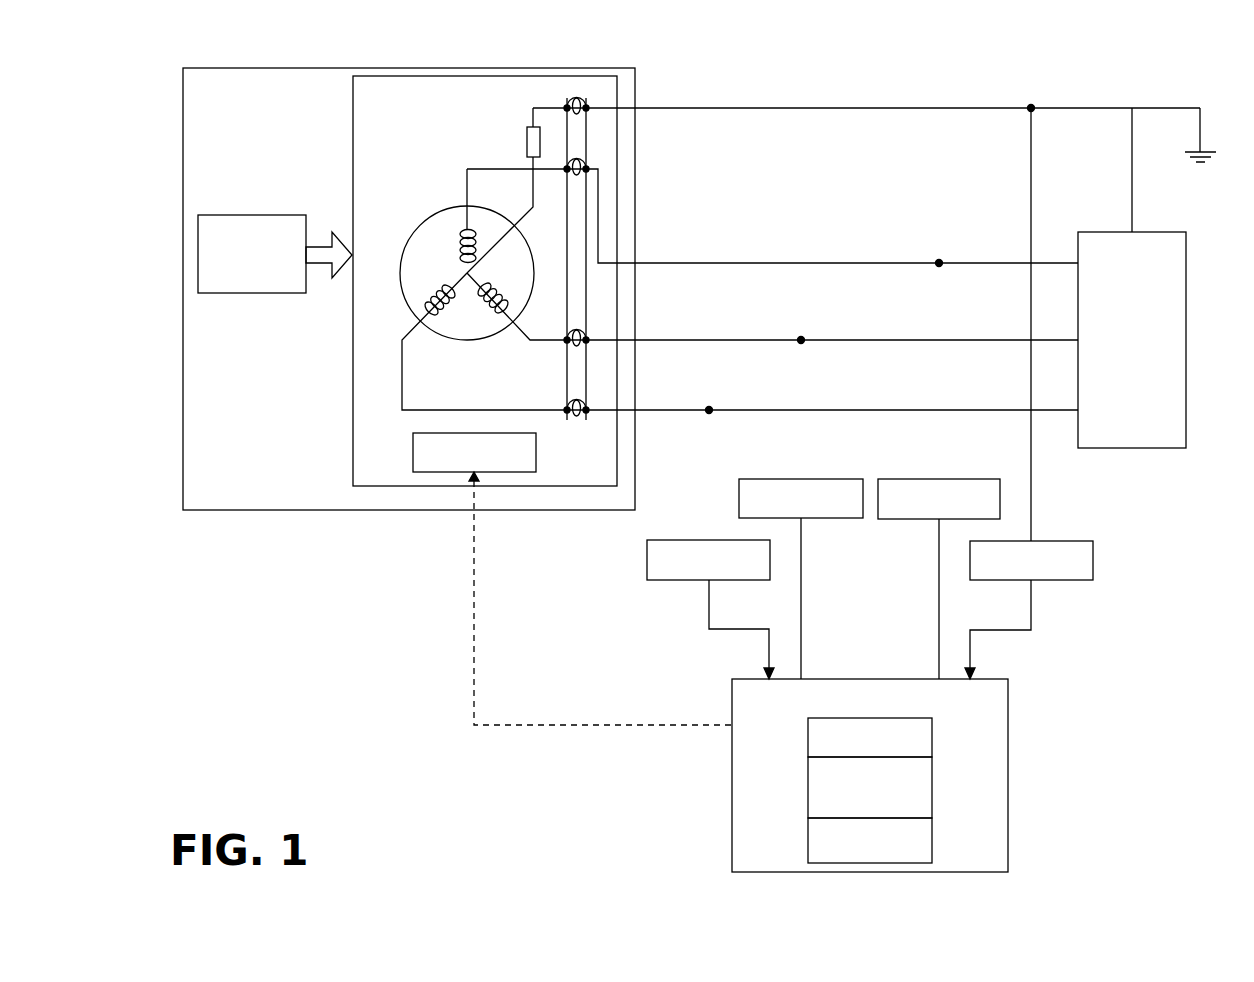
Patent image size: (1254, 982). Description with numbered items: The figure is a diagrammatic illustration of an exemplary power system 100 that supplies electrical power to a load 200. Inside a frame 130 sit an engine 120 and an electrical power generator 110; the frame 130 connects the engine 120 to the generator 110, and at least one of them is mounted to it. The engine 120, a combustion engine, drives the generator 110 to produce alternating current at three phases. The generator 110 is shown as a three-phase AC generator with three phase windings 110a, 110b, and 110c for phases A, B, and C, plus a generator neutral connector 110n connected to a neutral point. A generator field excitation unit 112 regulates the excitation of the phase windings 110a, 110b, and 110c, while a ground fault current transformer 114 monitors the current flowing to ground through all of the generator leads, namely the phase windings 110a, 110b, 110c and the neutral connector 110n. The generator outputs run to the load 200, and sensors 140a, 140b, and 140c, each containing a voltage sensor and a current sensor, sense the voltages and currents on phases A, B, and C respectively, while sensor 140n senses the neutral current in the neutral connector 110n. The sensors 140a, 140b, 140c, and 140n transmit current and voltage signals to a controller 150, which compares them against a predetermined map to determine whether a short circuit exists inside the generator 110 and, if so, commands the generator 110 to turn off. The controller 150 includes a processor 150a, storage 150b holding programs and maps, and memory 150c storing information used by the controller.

The power system 100 is at (374, 47).
The electrical power generator 110 is at (350, 118).
The phase winding 110a is at (443, 324).
The phase winding 110b is at (490, 320).
The phase winding 110c is at (455, 229).
The generator neutral connector 110n is at (525, 147).
The generator field excitation unit 112 is at (412, 456).
The ground fault current transformer 114 is at (564, 105).
The engine 120 is at (258, 213).
The frame 130 is at (182, 84).
The sensor 140a is at (647, 555).
The sensor 140b is at (852, 463).
The sensor 140c is at (993, 463).
The sensor 140n is at (1117, 547).
The controller 150 is at (899, 773).
The processor 150a is at (958, 720).
The storage 150b is at (958, 772).
The memory 150c is at (958, 828).
The load 200 is at (1186, 338).